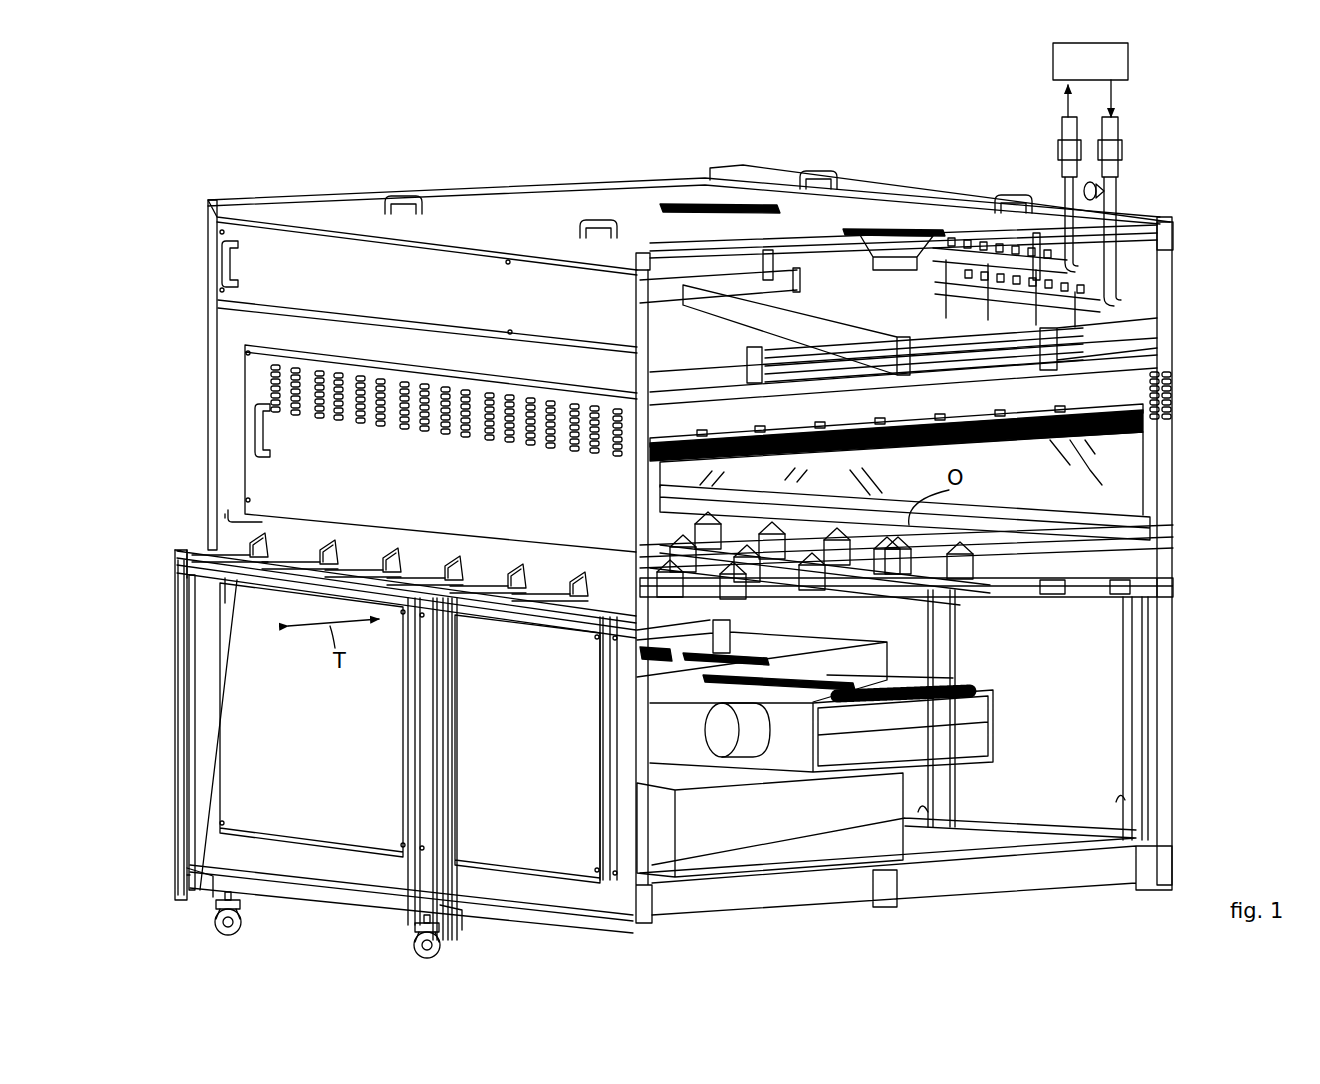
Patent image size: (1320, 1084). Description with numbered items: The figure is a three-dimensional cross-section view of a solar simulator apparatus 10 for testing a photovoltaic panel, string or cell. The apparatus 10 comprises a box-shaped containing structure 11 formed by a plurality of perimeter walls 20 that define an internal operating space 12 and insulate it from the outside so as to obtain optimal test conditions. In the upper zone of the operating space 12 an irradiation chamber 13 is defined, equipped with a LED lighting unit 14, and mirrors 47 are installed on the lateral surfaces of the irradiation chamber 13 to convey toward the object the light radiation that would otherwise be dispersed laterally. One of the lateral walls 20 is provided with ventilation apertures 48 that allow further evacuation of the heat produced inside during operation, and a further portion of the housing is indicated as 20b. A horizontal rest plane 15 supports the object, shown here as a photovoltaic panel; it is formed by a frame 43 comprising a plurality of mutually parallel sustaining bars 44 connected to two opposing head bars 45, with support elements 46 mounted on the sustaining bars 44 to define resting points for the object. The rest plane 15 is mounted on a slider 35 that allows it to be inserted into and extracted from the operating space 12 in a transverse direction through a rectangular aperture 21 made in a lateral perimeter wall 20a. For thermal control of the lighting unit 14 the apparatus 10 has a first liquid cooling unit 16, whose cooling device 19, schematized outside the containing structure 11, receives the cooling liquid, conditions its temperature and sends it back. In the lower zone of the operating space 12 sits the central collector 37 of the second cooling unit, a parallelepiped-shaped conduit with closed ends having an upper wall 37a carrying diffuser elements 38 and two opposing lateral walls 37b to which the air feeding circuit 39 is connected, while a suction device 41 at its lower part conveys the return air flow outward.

The solar simulator apparatus 10 is at (1205, 145).
The containing structure 11 is at (943, 183).
The internal operating space 12 is at (1082, 720).
The irradiation chamber 13 is at (1127, 518).
The LED lighting unit 14 is at (1072, 443).
The horizontal rest plane 15 is at (1090, 546).
The first liquid cooling unit 16 is at (1090, 393).
The cooling device 19 is at (1053, 62).
The perimeter walls 20 is at (625, 178).
The lateral perimeter wall 20a is at (228, 444).
The housing cover 20b is at (866, 213).
The aperture 21 is at (258, 518).
The slider 35 is at (178, 760).
The central collector 37 is at (846, 778).
The upper wall 37a is at (903, 688).
The lateral walls 37b is at (790, 744).
The diffuser elements 38 is at (913, 703).
The air feeding circuit 39 is at (715, 734).
The suction device 41 is at (778, 855).
The frame 43 is at (183, 549).
The sustaining bars 44 is at (905, 584).
The head bars 45 is at (235, 580).
The support elements 46 is at (836, 580).
The mirrors 47 is at (693, 478).
The ventilation apertures 48 is at (268, 407).